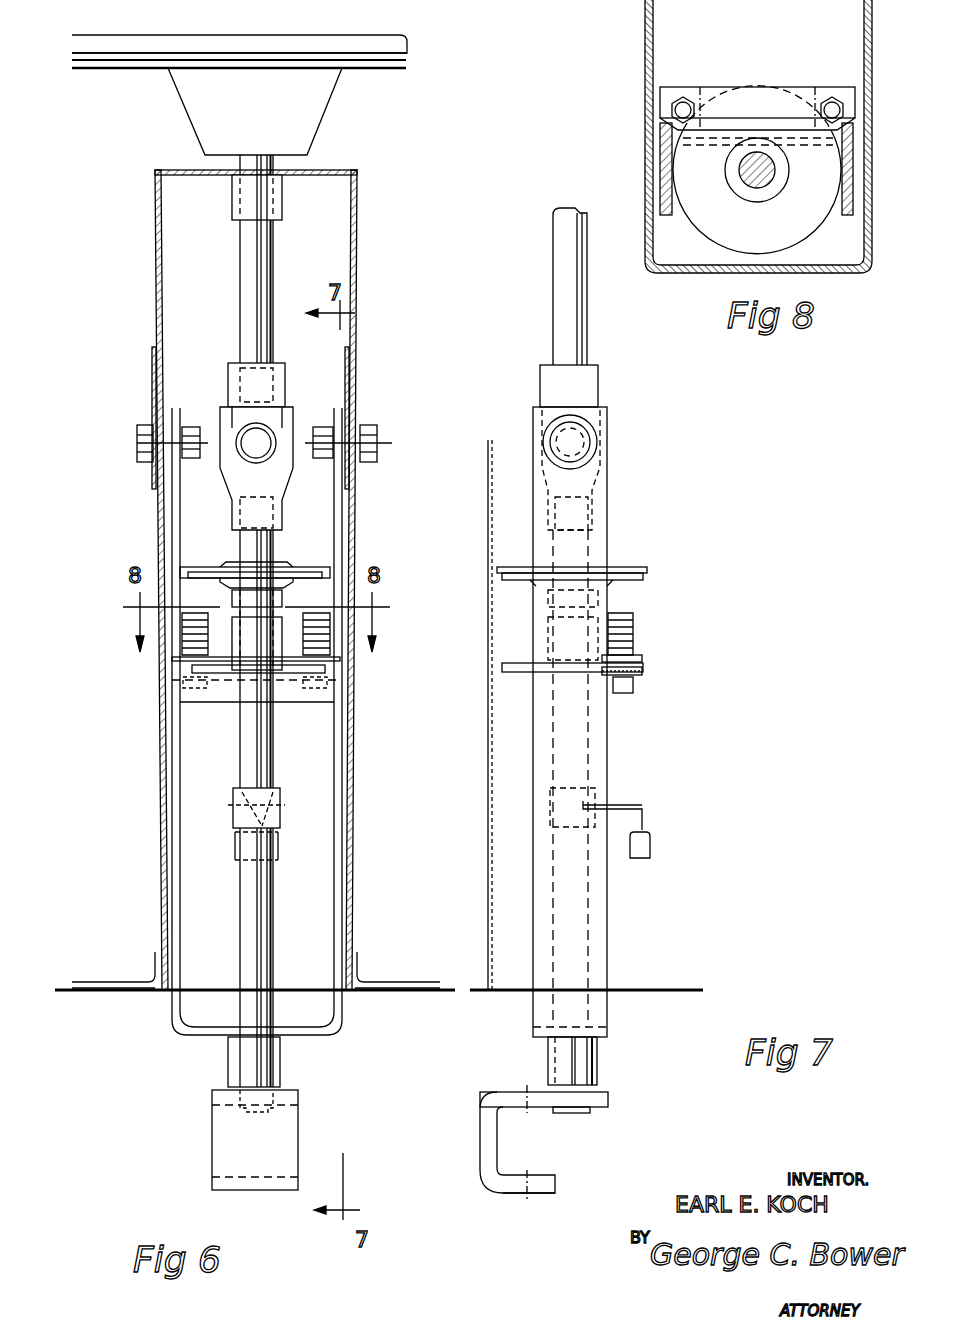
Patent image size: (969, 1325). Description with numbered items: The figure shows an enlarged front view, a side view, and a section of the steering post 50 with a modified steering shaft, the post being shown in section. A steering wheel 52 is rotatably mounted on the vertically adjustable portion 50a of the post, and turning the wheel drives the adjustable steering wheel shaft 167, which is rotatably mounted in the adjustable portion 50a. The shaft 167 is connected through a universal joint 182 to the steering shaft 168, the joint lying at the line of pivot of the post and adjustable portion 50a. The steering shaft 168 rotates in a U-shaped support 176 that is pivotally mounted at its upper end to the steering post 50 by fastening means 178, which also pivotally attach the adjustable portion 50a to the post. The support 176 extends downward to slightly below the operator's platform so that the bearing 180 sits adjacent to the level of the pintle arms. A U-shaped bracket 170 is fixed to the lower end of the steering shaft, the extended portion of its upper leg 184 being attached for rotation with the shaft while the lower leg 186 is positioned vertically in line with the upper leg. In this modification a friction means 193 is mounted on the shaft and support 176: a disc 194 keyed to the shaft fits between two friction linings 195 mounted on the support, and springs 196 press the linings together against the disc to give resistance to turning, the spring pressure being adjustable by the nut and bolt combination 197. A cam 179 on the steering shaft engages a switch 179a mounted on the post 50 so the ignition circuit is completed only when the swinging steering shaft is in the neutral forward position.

In FIG. 6, the steering post 50 is at (364, 260).
In FIG. 6, the vertically adjustable portion 50a is at (356, 313).
In FIG. 6, the steering wheel 52 is at (407, 37).
In FIG. 6, the adjustable steering wheel shaft 167 is at (240, 267).
In FIG. 6, the steering shaft 168 is at (268, 853).
In FIG. 8, the steering shaft 168 is at (733, 175).
In FIG. 6, the U-shaped bracket 170 is at (212, 1124).
In FIG. 7, the U-shaped bracket 170 is at (478, 1107).
In FIG. 6, the U-shaped support 176 is at (183, 1033).
In FIG. 7, the U-shaped support 176 is at (608, 955).
In FIG. 6, the fastening means 178 is at (137, 443).
In FIG. 7, the cam 179 is at (643, 808).
In FIG. 7, the switch 179a is at (650, 850).
In FIG. 6, the bearing 180 is at (280, 1066).
In FIG. 7, the bearing 180 is at (597, 1067).
In FIG. 6, the universal joint 182 is at (287, 393).
In FIG. 7, the universal joint 182 is at (602, 390).
In FIG. 7, the upper leg 184 is at (608, 1098).
In FIG. 7, the lower leg 186 is at (550, 1197).
In FIG. 7, the friction means 193 is at (656, 613).
In FIG. 6, the disc 194 is at (319, 632).
In FIG. 7, the disc 194 is at (533, 667).
In FIG. 8, the disc 194 is at (805, 227).
In FIG. 7, the friction linings 195 is at (642, 670).
In FIG. 8, the friction linings 195 is at (802, 85).
In FIG. 6, the springs 196 is at (256, 634).
In FIG. 7, the springs 196 is at (633, 640).
In FIG. 7, the nut and bolt combination 197 is at (632, 612).